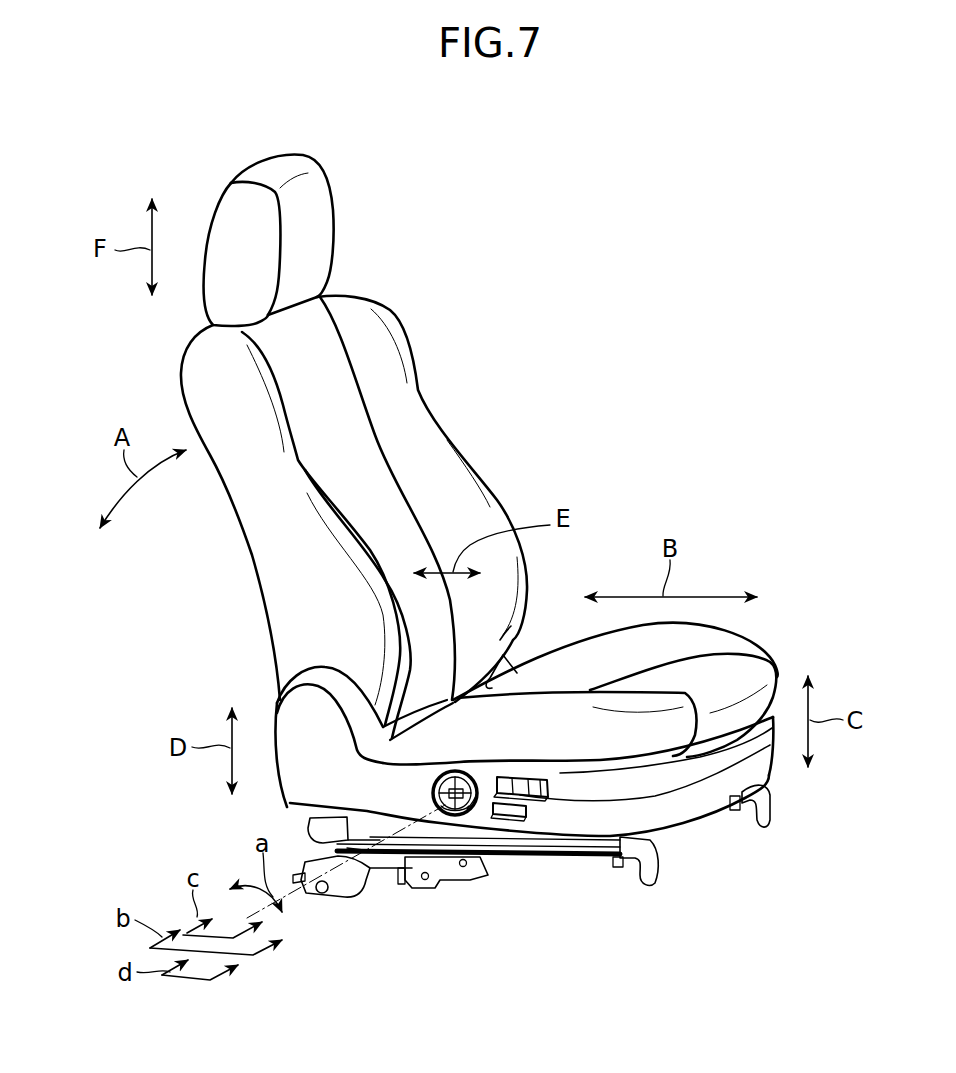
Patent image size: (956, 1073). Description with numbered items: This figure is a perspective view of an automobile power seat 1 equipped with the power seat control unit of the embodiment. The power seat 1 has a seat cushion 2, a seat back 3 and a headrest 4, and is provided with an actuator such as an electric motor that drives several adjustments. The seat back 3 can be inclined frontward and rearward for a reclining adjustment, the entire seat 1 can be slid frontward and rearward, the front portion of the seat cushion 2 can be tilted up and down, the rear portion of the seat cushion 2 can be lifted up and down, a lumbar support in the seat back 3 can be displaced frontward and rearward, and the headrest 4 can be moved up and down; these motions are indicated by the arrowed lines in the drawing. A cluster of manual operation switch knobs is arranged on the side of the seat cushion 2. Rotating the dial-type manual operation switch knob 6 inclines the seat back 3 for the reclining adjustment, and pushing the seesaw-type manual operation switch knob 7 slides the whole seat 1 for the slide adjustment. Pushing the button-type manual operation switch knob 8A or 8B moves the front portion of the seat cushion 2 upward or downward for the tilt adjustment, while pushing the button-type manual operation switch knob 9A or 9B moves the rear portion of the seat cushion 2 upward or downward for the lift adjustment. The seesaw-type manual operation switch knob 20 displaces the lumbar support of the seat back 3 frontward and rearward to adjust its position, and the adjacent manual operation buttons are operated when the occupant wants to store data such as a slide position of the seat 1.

The power seat 1 is at (497, 545).
The seat cushion 2 is at (738, 637).
The seat back 3 is at (433, 437).
The headrest 4 is at (317, 212).
The dial-type manual operation switch knob 6 is at (526, 819).
The seesaw-type manual operation switch knob 7 is at (432, 793).
The button-type manual operation switch knob 8A is at (577, 834).
The button-type manual operation switch knob 8B is at (465, 813).
The button-type manual operation switch knob 9A is at (450, 771).
The button-type manual operation switch knob 9B is at (445, 810).
The seesaw-type manual operation switch knob 20 is at (523, 818).